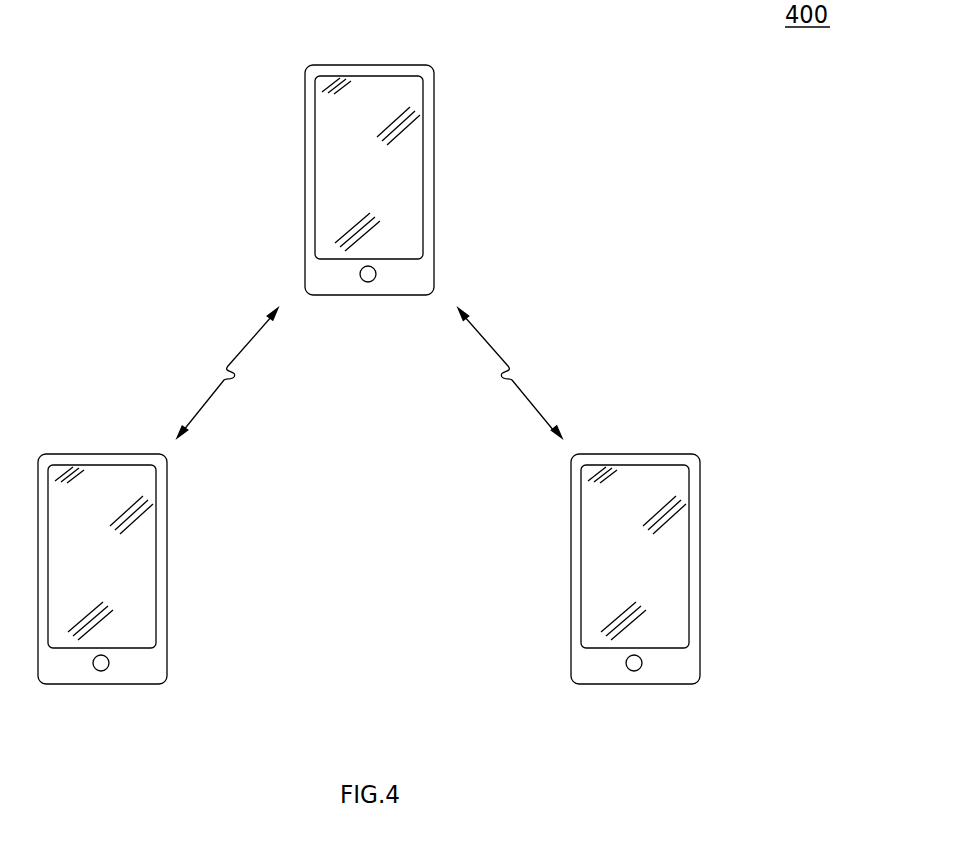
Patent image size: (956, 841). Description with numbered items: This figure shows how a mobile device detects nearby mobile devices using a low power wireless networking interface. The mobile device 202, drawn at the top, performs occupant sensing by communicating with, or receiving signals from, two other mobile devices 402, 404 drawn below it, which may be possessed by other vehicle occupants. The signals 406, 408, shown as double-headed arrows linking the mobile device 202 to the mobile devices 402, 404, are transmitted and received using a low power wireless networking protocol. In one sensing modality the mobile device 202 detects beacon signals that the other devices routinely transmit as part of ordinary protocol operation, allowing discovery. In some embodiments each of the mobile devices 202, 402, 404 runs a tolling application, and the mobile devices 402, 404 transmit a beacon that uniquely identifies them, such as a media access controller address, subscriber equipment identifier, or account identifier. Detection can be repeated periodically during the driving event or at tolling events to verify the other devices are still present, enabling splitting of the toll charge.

The mobile device 202 is at (433, 132).
The mobile device 402 is at (167, 520).
The mobile device 404 is at (699, 520).
The signal 406 is at (222, 387).
The signal 408 is at (520, 394).